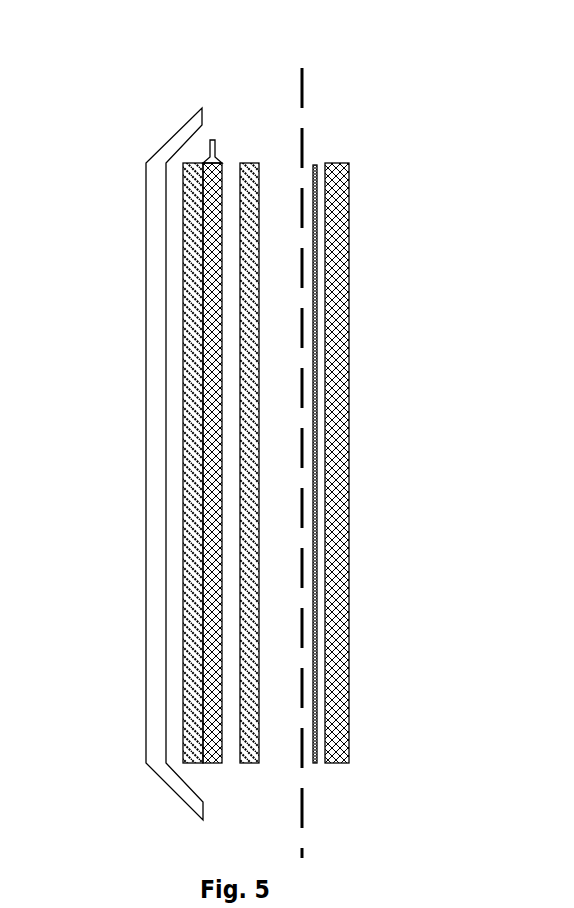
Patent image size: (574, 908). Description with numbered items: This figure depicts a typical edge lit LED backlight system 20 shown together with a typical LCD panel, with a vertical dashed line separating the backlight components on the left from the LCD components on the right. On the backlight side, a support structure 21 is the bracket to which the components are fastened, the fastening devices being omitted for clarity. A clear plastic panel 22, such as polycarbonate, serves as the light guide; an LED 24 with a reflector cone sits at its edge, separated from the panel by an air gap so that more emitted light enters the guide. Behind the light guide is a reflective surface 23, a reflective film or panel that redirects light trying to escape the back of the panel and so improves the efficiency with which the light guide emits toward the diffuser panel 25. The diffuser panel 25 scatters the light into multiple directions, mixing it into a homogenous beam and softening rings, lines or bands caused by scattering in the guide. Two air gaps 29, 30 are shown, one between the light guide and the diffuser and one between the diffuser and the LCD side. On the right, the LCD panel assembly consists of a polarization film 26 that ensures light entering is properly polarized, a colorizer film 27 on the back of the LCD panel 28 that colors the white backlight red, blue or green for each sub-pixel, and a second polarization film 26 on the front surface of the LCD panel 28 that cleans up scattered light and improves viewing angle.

The edge lit LED backlight system 20 is at (156, 88).
The support structure 21 is at (147, 217).
The clear plastic panel 22 is at (211, 766).
The reflective surface 23 is at (185, 677).
The LED 24 is at (217, 147).
The diffuser panel 25 is at (250, 162).
The polarization film 26 is at (315, 162).
The colorizer film 27 is at (325, 765).
The LCD panel 28 is at (338, 196).
The air gap 29 is at (230, 613).
The air gap 30 is at (275, 668).